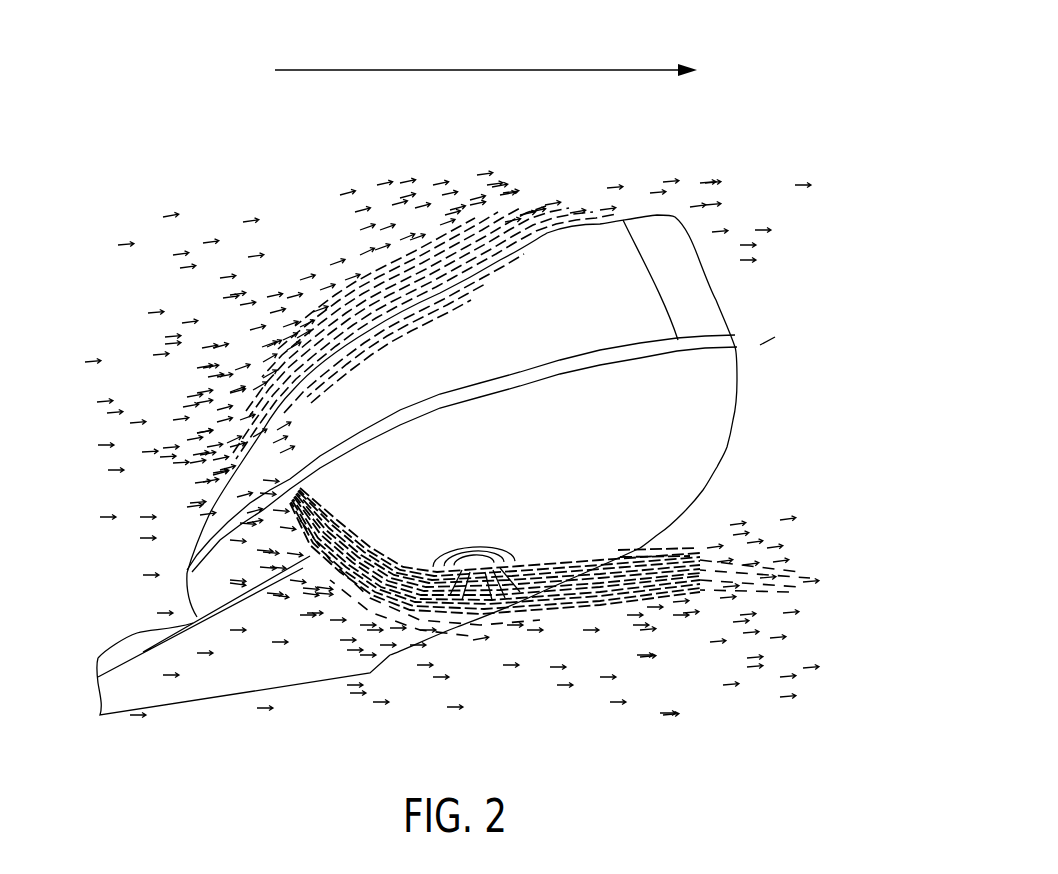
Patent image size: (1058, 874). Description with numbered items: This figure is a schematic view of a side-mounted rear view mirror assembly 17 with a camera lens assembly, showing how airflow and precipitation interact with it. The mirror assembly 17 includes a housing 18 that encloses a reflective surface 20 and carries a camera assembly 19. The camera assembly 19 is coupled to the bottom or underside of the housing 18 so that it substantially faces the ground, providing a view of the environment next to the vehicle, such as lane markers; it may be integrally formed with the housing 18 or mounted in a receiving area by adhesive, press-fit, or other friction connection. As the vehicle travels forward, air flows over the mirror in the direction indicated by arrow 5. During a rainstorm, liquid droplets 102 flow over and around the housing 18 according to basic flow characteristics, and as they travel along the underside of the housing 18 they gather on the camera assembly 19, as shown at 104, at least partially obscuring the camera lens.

The arrow 5 is at (497, 70).
The side-mounted rear view mirror assembly 17 is at (625, 145).
The housing 18 is at (710, 313).
The camera assembly 19 is at (477, 567).
The reflective surface 20 is at (767, 363).
The droplets 102 is at (333, 232).
The gathered droplets on the camera assembly 104 is at (487, 567).